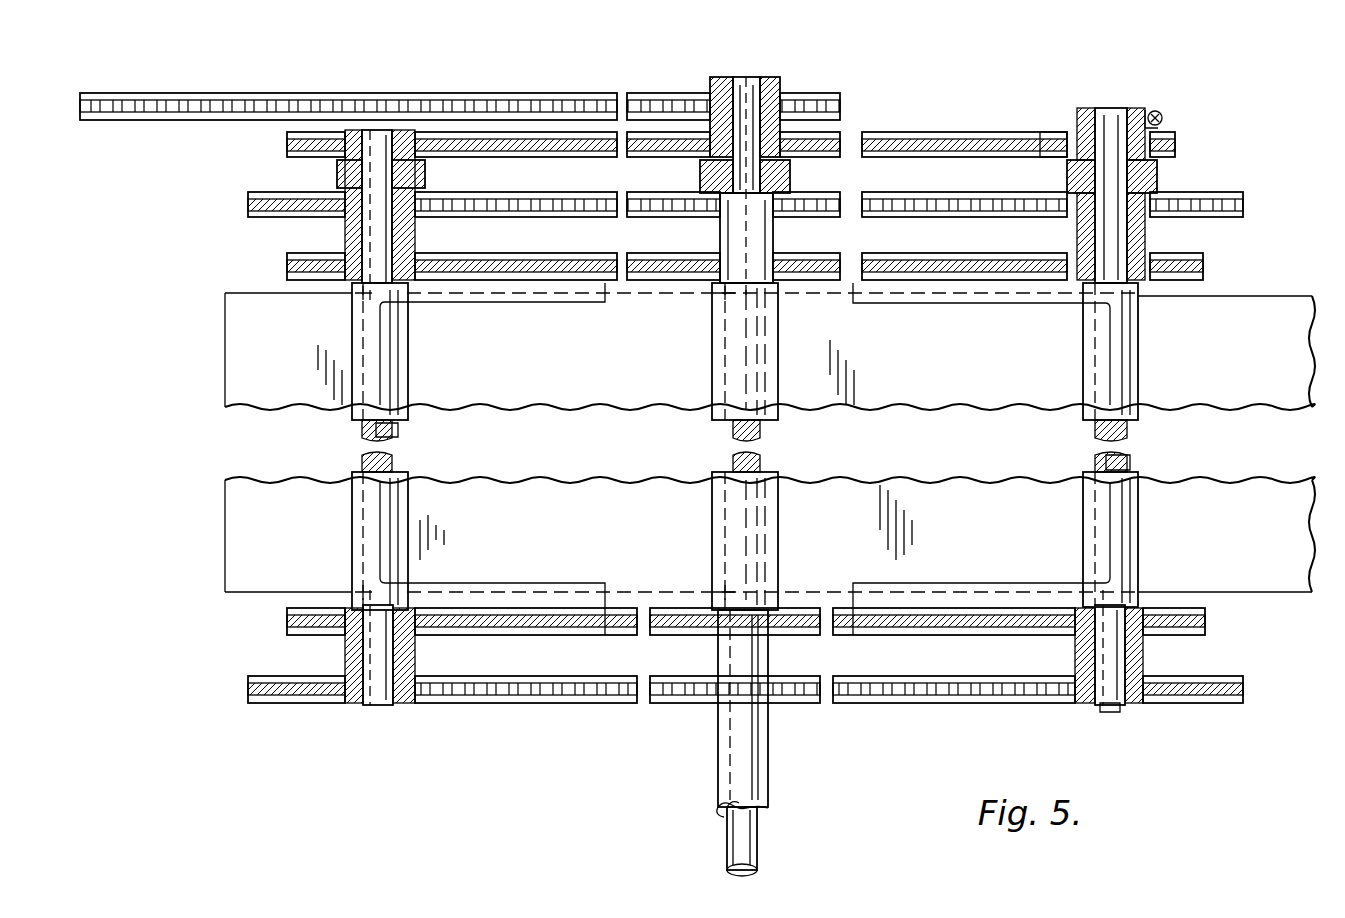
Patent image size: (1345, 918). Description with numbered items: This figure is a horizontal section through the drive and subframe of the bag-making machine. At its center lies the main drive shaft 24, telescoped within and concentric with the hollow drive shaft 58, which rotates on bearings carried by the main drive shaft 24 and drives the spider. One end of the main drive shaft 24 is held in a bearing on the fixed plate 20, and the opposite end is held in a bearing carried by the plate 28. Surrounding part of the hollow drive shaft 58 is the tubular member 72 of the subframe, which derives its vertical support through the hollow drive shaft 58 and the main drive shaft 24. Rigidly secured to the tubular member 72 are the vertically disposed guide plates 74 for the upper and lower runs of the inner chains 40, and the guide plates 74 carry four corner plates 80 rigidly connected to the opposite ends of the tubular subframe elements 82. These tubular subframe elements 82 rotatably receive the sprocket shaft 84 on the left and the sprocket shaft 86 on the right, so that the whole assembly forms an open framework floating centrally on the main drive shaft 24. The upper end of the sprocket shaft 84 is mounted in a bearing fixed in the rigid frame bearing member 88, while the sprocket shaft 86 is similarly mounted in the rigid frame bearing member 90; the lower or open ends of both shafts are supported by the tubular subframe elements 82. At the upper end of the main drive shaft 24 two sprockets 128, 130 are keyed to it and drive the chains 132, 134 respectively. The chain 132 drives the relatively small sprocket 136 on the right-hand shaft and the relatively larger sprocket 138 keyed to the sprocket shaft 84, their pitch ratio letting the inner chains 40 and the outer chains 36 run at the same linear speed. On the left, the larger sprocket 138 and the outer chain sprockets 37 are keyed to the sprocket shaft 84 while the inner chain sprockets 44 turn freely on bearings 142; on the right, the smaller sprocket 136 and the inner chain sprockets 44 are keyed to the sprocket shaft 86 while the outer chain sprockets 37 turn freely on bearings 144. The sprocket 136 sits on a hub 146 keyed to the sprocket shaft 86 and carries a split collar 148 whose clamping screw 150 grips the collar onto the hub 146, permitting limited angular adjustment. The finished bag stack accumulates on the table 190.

The plate 20 is at (702, 178).
The main drive shaft 24 is at (748, 78).
The plate 28 is at (790, 178).
The endless chains 36 is at (618, 205).
The sprockets 37 is at (290, 202).
The endless chains 40 is at (655, 263).
The sprockets 44 is at (300, 262).
The hollow drive shaft 58 is at (763, 240).
The tubular member 72 is at (714, 492).
The guide plates 74 is at (540, 263).
The corner plates 80 is at (470, 304).
The tubular subframe elements 82 is at (360, 431).
The sprocket shaft 84 is at (396, 431).
The sprocket shaft 86 is at (1097, 431).
The rigid frame bearing member 88 is at (338, 175).
The rigid frame bearing member 90 is at (1152, 178).
The sprocket 128 is at (835, 137).
The sprocket 130 is at (712, 90).
The chain 132 is at (885, 138).
The chain 134 is at (612, 105).
The sprocket 136 is at (1062, 132).
The sprocket 138 is at (330, 150).
The bearings 142 is at (355, 283).
The bearings 144 is at (1150, 217).
The hub 146 is at (1112, 115).
The split collar 148 is at (1142, 112).
The clamping screw 150 is at (1162, 115).
The table 190 is at (240, 480).